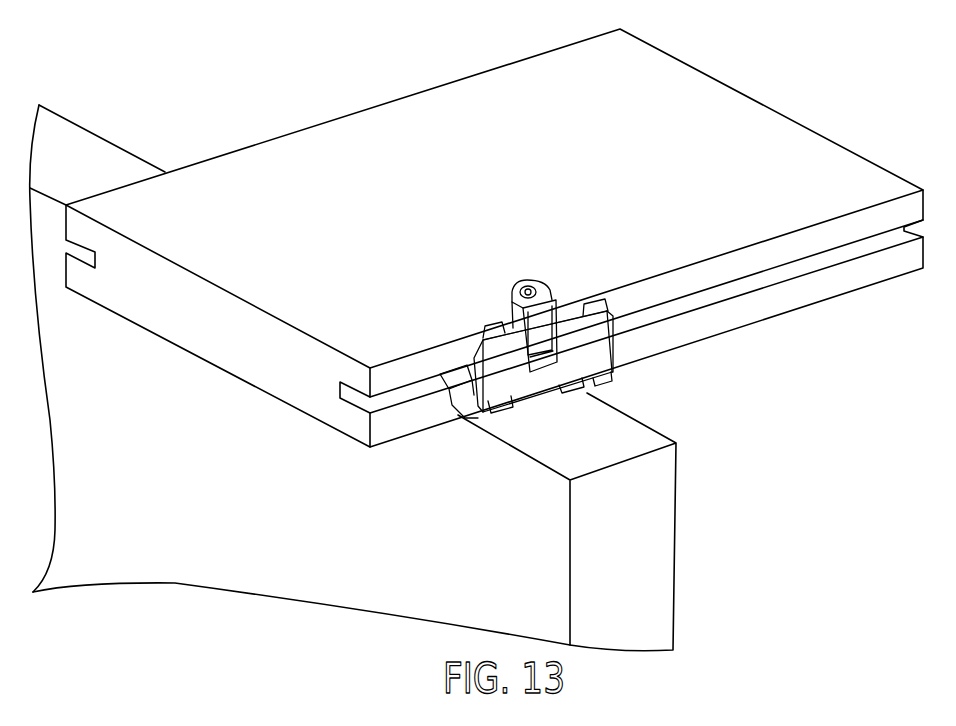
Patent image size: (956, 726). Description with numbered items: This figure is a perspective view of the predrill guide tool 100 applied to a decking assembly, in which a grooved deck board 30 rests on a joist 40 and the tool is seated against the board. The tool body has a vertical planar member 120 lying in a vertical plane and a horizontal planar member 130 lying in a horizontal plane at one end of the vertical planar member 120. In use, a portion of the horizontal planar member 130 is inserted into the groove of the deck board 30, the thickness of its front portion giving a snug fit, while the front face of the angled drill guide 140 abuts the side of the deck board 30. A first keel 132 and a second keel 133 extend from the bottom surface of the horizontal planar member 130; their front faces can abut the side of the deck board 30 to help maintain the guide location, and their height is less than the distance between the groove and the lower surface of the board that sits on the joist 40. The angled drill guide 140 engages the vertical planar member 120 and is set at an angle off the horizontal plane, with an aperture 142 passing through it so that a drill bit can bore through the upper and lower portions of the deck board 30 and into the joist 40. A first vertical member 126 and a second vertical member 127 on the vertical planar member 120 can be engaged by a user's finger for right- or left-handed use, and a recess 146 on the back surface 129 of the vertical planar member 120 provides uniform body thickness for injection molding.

The deck board 30 is at (85, 150).
The joist 40 is at (175, 578).
The predrill guide tool 100 is at (388, 231).
The vertical planar member 120 is at (527, 387).
The first vertical member 126 is at (590, 303).
The second vertical member 127 is at (510, 345).
The back surface 129 is at (490, 340).
The horizontal planar member 130 is at (462, 380).
The first keel 132 is at (510, 405).
The second keel 133 is at (583, 393).
The angled drill guide 140 is at (514, 292).
The aperture 142 is at (528, 285).
The recess 146 is at (560, 307).